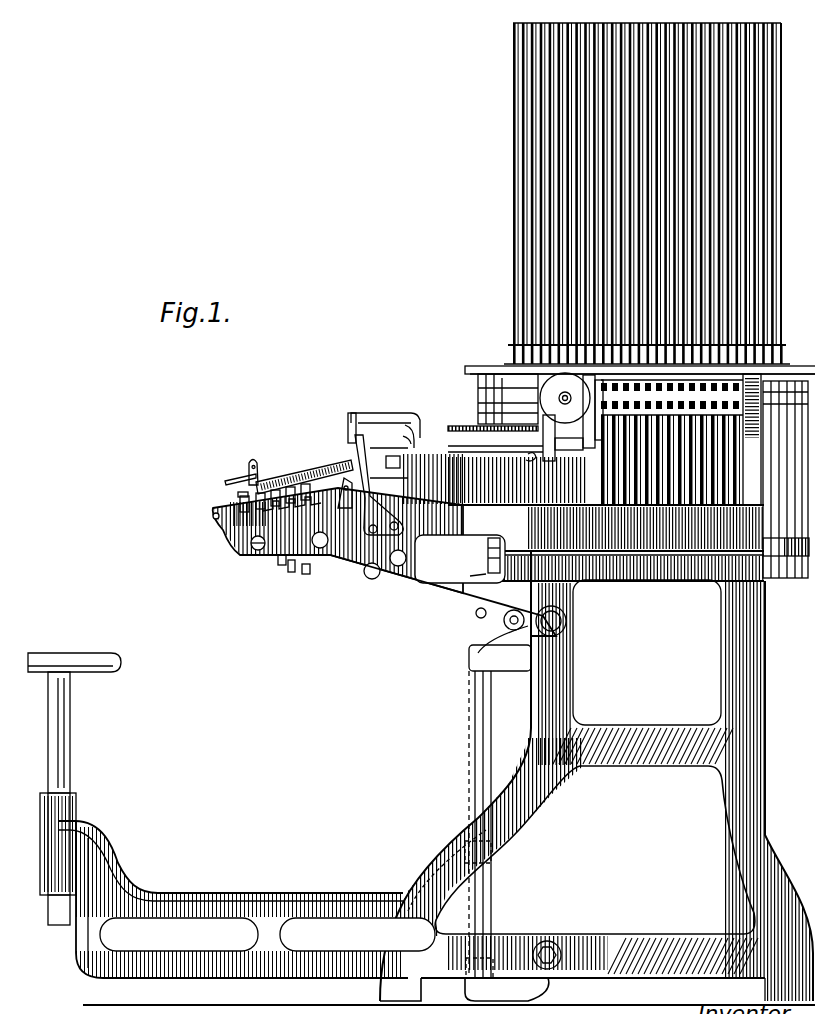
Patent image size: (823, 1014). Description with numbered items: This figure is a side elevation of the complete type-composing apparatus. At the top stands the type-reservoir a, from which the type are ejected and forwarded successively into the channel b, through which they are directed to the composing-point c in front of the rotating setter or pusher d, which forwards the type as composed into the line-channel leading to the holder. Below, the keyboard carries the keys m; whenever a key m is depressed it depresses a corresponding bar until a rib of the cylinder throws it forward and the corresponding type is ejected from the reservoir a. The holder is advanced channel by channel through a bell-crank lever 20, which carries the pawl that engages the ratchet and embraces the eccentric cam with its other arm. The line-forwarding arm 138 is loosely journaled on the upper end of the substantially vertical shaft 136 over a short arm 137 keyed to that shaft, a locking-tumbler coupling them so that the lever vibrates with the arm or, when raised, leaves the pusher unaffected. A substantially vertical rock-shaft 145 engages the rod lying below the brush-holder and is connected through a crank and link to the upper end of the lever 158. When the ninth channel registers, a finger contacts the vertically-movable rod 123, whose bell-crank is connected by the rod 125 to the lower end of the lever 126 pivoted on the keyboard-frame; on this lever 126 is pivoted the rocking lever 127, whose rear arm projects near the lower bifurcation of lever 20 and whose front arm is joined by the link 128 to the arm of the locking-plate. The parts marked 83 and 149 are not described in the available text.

The type-reservoir a is at (505, 263).
The channel b is at (500, 356).
The composing-point c is at (520, 424).
The rotating setter or pusher d is at (521, 449).
The bracket 83 is at (372, 400).
The line-forwarding arm 138 is at (398, 417).
The short arm 137 is at (341, 420).
The vertical shaft 136 is at (348, 447).
The lever 158 is at (300, 458).
The stop post 149 is at (241, 461).
The keys m is at (230, 486).
The rock-shaft 145 is at (392, 456).
The link 128 is at (272, 548).
The rocking lever 127 is at (282, 560).
The lever 126 is at (298, 562).
The bell-crank lever 20 is at (384, 562).
The vertically-movable rod 123 is at (480, 537).
The rod 125 is at (466, 568).